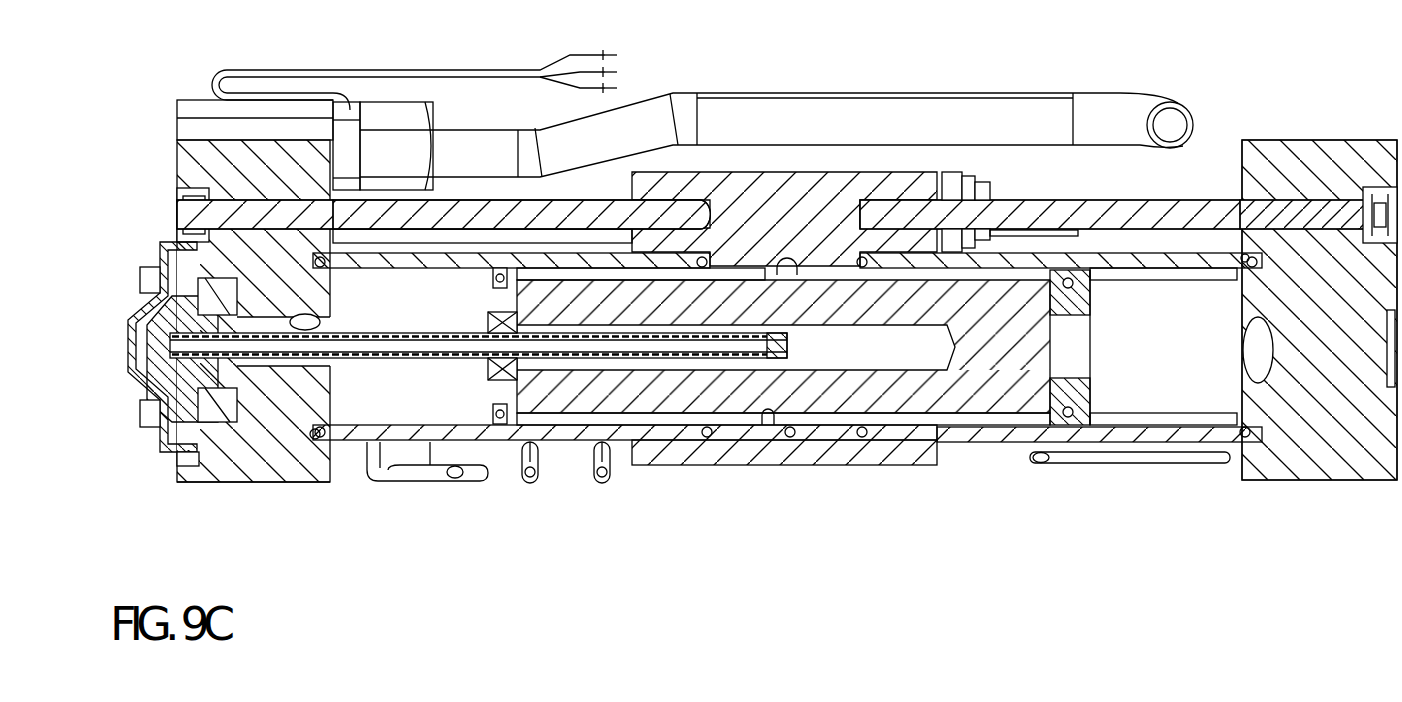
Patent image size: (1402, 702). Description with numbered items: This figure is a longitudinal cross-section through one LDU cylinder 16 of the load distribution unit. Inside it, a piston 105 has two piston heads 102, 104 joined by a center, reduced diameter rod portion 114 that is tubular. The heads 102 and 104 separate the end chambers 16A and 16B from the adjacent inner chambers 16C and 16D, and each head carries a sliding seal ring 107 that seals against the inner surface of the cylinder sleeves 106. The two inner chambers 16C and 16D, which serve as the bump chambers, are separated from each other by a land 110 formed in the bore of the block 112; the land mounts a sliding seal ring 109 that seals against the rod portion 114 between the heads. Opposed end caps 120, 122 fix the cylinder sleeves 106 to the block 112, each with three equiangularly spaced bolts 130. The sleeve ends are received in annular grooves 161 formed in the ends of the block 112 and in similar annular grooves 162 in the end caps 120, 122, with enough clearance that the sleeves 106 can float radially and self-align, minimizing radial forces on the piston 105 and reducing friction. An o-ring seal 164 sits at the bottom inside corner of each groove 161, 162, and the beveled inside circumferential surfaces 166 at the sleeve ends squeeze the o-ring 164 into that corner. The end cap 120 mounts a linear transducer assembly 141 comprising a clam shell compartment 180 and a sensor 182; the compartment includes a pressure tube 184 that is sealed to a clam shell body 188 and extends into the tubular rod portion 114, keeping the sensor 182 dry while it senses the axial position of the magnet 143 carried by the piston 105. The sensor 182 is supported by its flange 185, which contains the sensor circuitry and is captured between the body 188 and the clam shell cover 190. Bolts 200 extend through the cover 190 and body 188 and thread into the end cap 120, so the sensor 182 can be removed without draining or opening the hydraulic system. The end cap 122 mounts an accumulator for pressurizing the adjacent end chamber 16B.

The LDU cylinder 16 is at (1350, 138).
The end chamber 16A is at (353, 420).
The end chamber 16B is at (1158, 442).
The inner chamber 16C is at (577, 425).
The inner chamber 16D is at (985, 420).
The piston head 102 is at (463, 229).
The piston head 104 is at (1090, 293).
The piston 105 is at (1095, 345).
The cylinder sleeve 106 is at (383, 243).
The sliding seal ring 107 is at (505, 438).
The sliding seal ring 109 is at (795, 436).
The land 110 is at (767, 428).
The block 112 is at (913, 466).
The rod portion 114 is at (677, 442).
The end cap 120 is at (255, 483).
The end cap 122 is at (1340, 482).
The bolt 130 is at (603, 205).
The linear transducer assembly 141 is at (465, 322).
The magnet 143 is at (487, 389).
The annular groove 161 is at (674, 262).
The annular groove 162 is at (328, 428).
The o-ring seal 164 is at (313, 440).
The inside circumferential surface 166 is at (326, 266).
The clam shell compartment 180 is at (128, 370).
The sensor 182 is at (430, 331).
The pressure tube 184 is at (455, 360).
The flange 185 is at (172, 240).
The clam shell body 188 is at (215, 470).
The clam shell cover 190 is at (180, 462).
The bolt 200 is at (140, 278).